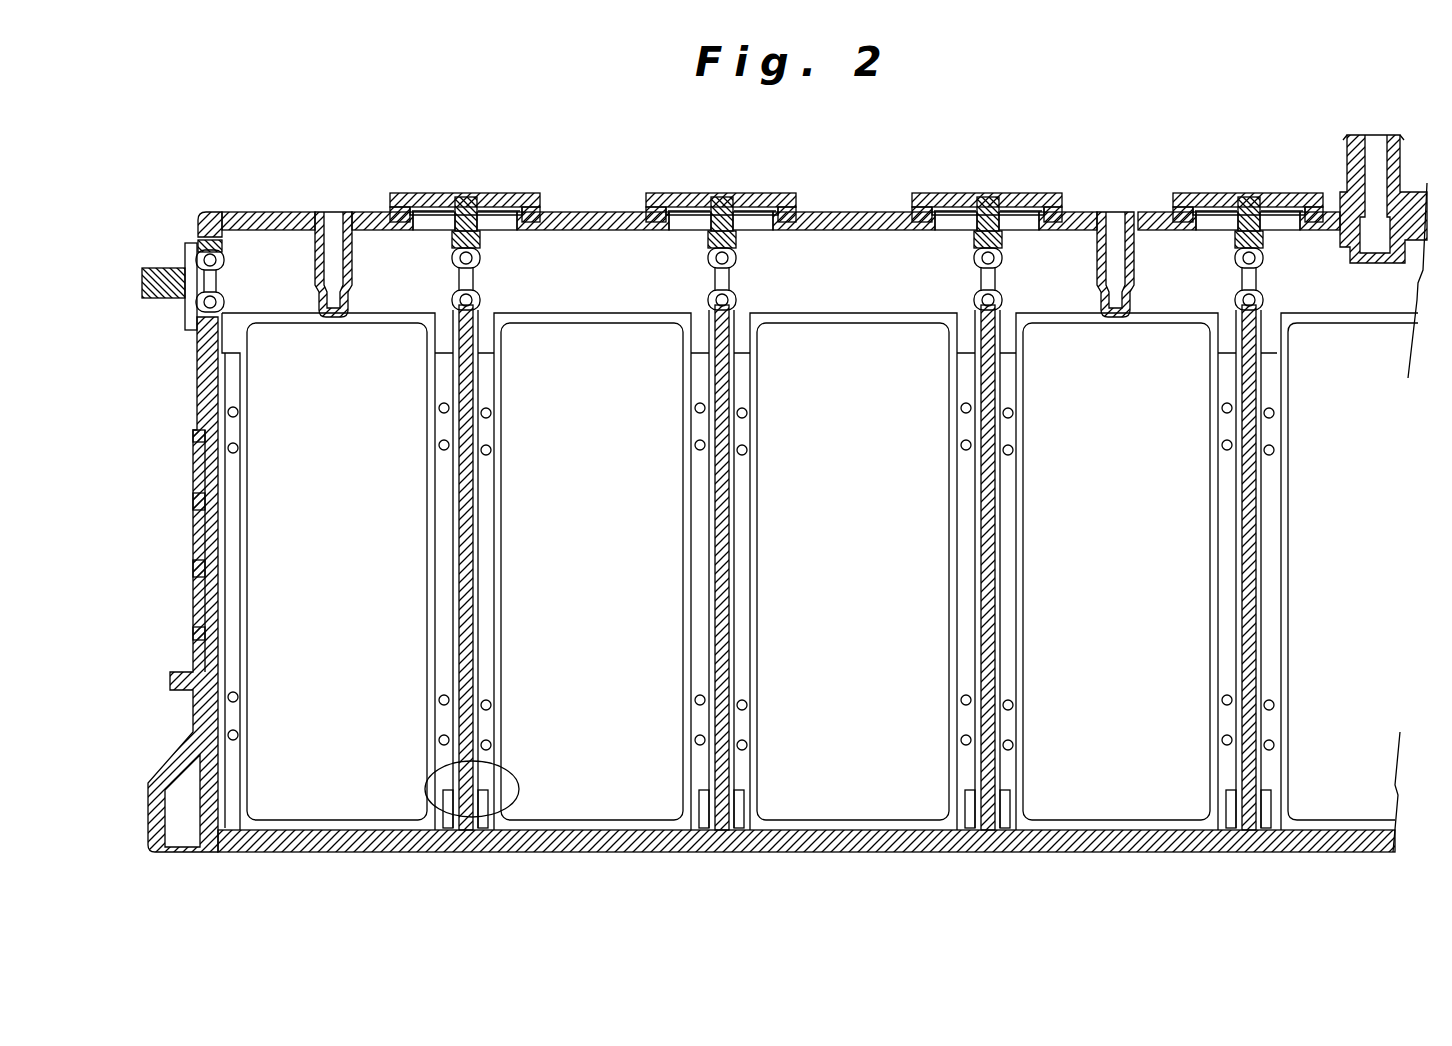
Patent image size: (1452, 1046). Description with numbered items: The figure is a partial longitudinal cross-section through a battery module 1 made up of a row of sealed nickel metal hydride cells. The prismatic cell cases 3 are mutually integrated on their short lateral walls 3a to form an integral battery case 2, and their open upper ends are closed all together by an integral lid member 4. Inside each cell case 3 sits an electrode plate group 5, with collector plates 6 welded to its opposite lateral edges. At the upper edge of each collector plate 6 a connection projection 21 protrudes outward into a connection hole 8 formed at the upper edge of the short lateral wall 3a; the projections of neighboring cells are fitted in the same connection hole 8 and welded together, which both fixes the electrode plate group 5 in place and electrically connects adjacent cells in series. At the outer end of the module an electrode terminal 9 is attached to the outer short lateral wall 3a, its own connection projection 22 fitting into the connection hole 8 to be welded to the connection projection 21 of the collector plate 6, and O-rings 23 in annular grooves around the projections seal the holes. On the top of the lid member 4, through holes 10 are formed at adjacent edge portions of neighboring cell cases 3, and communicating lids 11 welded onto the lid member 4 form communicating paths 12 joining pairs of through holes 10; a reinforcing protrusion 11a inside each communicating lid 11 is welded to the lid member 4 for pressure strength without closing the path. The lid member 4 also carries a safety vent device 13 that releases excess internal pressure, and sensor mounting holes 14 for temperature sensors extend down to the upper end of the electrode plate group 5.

The battery module 1 is at (216, 206).
The integral battery case 2 is at (188, 531).
The cell case 3 is at (232, 828).
The short lateral wall 3a is at (210, 376).
The lid member 4 is at (255, 222).
The electrode plate group 5 is at (348, 601).
The collector plate 6 is at (226, 608).
The connection hole 8 is at (202, 304).
The electrode terminal 9 is at (162, 268).
The through hole 10 is at (433, 226).
The communicating lid 11 is at (418, 204).
The reinforcing protrusion 11a is at (463, 207).
The communicating path 12 is at (486, 212).
The safety vent device 13 is at (1373, 232).
The sensor mounting hole 14 is at (342, 248).
The connection projection 21 is at (224, 278).
The connection projection 22 is at (205, 277).
The O-ring 23 is at (200, 330).